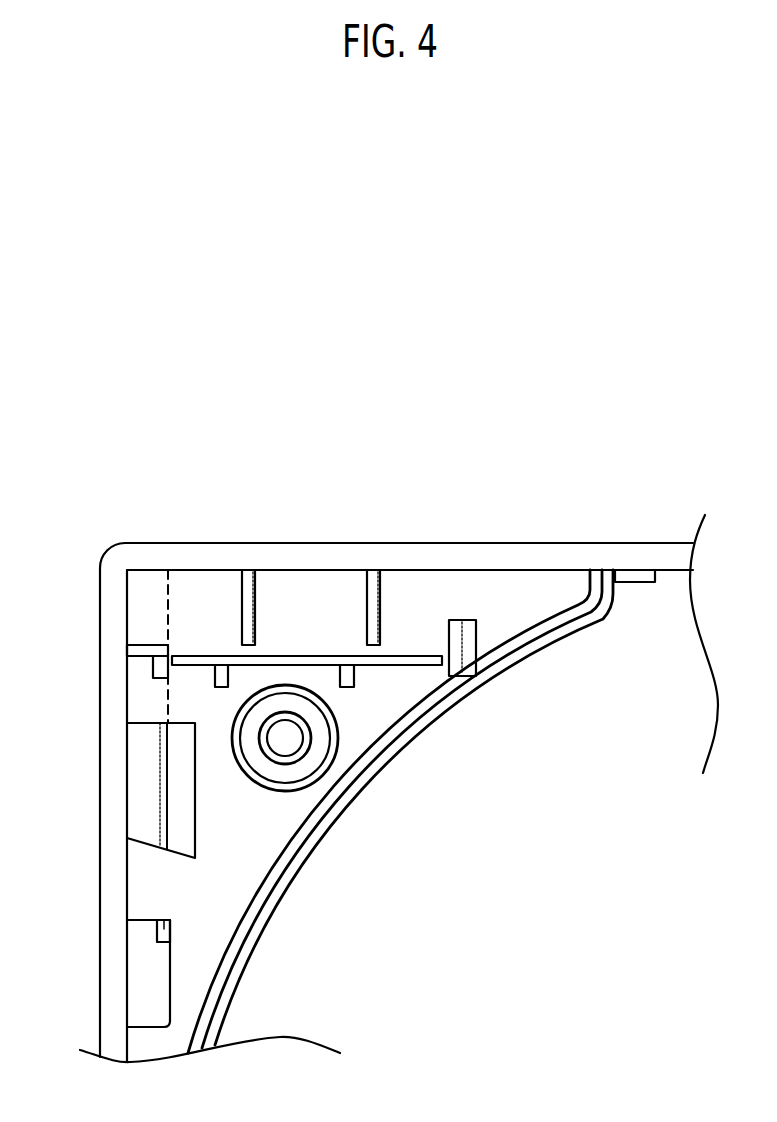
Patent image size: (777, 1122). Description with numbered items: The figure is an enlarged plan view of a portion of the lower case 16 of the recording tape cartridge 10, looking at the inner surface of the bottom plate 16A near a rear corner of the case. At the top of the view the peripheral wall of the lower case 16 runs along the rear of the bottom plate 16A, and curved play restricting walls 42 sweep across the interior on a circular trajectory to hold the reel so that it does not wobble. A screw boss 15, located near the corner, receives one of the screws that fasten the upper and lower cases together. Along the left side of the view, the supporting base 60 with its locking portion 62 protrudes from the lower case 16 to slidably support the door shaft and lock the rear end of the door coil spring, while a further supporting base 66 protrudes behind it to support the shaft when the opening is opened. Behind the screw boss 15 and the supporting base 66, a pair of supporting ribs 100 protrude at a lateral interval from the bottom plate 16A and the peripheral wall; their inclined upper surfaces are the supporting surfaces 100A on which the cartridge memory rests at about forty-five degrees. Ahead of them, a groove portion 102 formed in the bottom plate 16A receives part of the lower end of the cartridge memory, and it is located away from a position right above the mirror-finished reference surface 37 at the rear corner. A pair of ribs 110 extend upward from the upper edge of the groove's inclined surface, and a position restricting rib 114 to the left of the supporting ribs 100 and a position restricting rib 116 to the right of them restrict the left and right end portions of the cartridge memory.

The recording tape cartridge 10 is at (682, 513).
The lower case 16 is at (560, 543).
The bottom plate 16A is at (208, 912).
The reference surface 37 is at (147, 613).
The play restricting wall 42 is at (520, 668).
The supporting rib 100 is at (242, 607).
The supporting surface 100A is at (247, 583).
The groove portion 102 is at (407, 658).
The rib 110 is at (222, 687).
The position restricting rib 114 is at (453, 658).
The screw boss 15 is at (318, 778).
The position restricting rib 116 is at (127, 667).
The supporting base 66 is at (147, 778).
The locking portion 62 is at (168, 920).
The supporting base 60 is at (147, 978).